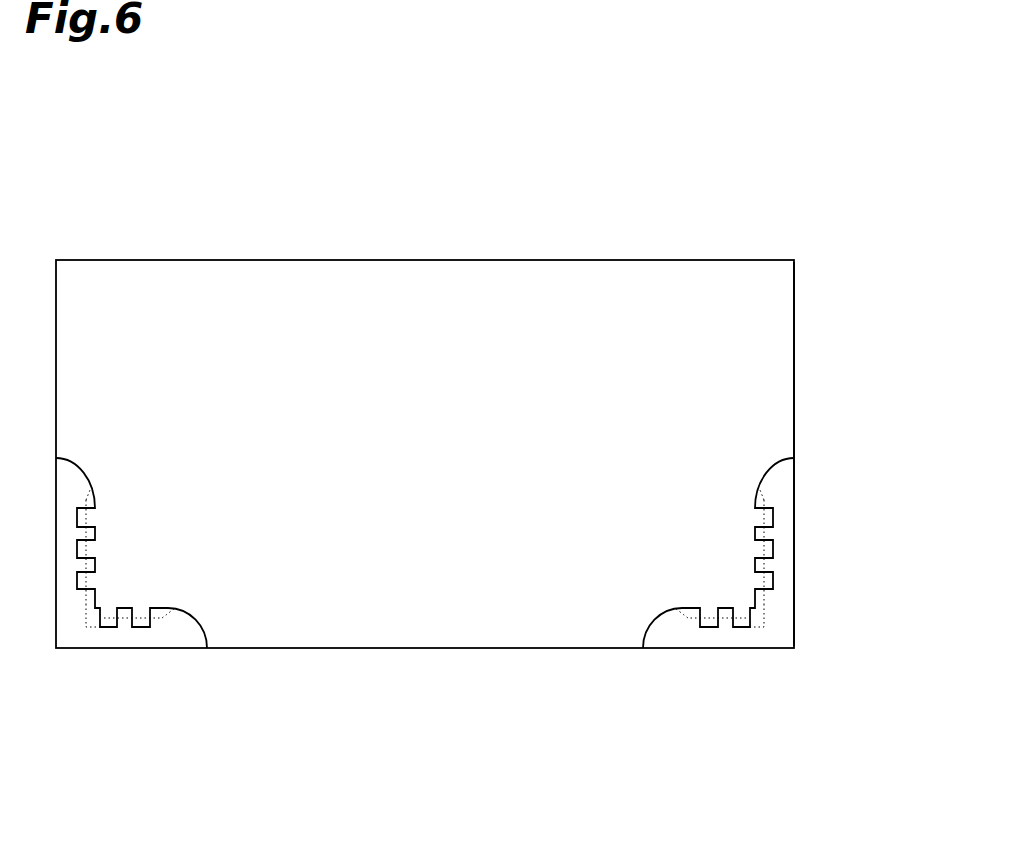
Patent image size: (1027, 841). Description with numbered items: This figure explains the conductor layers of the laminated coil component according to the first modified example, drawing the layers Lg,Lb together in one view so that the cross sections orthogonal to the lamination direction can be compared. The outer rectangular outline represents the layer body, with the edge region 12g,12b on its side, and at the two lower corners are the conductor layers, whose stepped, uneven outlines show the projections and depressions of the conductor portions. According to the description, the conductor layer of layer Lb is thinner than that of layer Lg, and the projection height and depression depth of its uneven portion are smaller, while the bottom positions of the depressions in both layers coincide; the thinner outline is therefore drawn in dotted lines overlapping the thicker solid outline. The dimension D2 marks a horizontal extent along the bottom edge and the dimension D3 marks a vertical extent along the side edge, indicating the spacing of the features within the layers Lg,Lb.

The layers Lg,Lb is at (557, 243).
The side surface of light guide plate 12g,12b is at (794, 340).
The dimension D2 is at (496, 778).
The dimension D3 is at (869, 405).